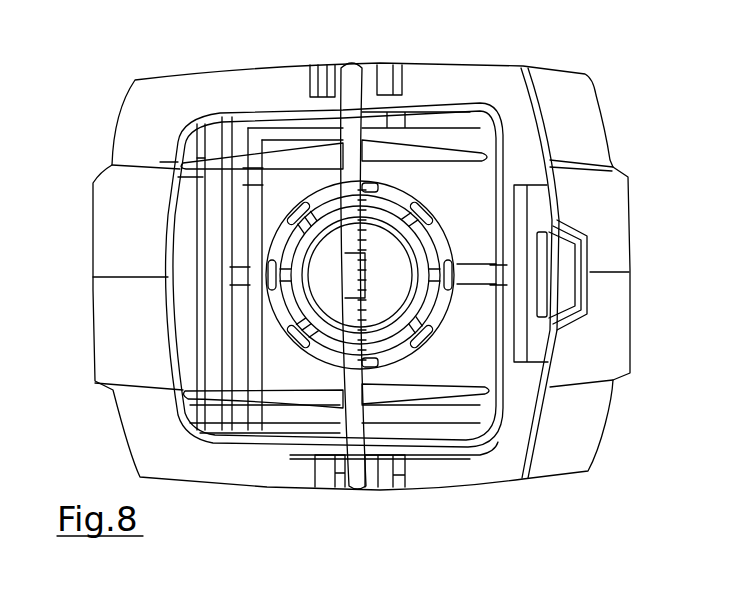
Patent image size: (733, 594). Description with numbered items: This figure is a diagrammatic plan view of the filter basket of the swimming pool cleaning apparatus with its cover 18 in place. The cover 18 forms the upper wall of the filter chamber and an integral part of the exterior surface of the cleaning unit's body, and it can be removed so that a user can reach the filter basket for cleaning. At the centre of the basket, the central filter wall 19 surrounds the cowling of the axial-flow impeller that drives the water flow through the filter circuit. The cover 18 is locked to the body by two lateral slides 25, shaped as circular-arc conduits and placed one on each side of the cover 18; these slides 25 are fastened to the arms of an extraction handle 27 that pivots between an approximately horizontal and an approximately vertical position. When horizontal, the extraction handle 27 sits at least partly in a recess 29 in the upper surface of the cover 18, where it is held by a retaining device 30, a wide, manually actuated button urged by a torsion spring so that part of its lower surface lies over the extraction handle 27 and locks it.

The cover 18 is at (130, 214).
The central filter wall 19 is at (297, 228).
The lateral slides 25 is at (373, 461).
The extraction handle 27 is at (322, 414).
The recess 29 is at (518, 418).
The retaining device 30 is at (562, 271).